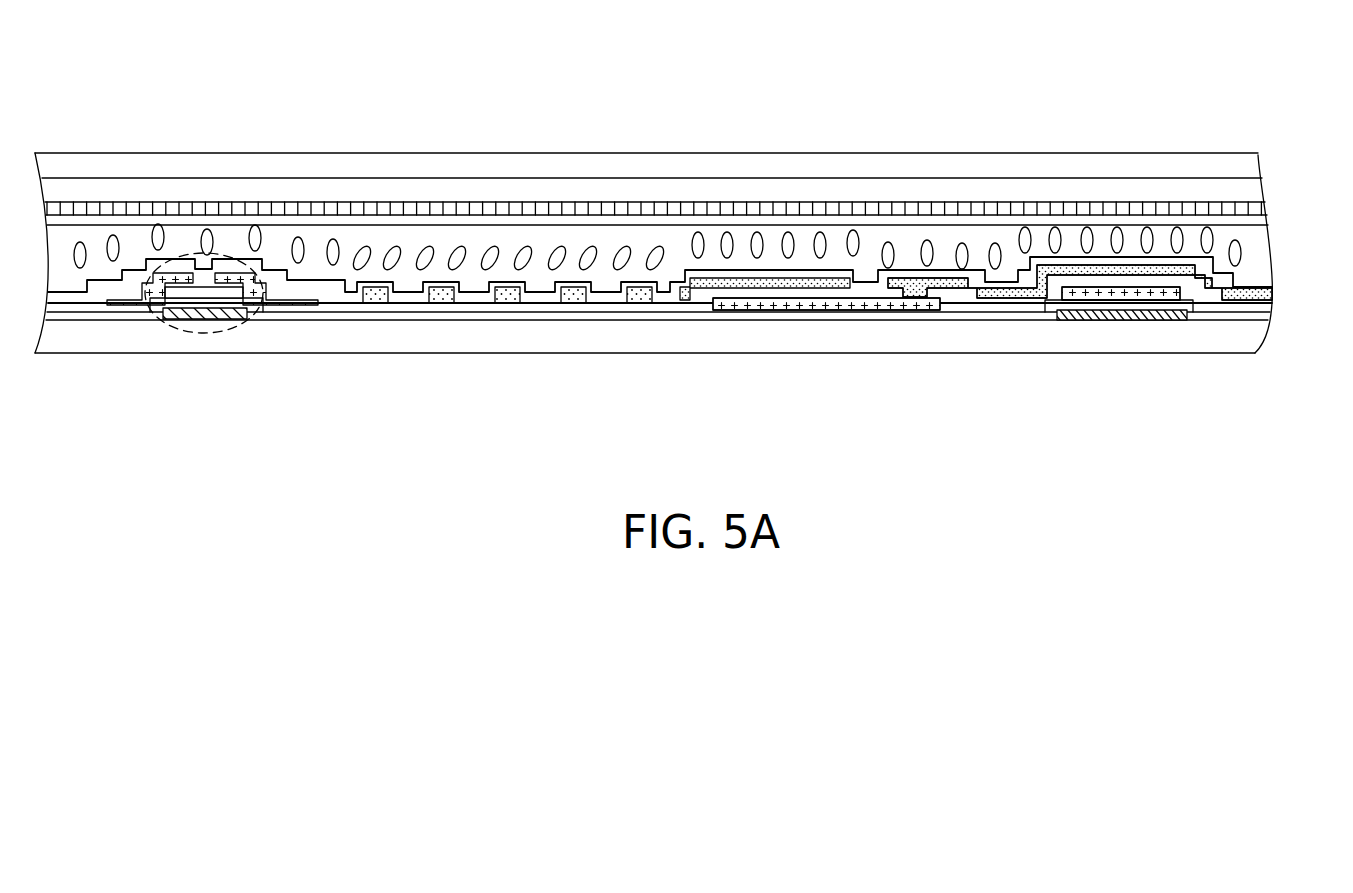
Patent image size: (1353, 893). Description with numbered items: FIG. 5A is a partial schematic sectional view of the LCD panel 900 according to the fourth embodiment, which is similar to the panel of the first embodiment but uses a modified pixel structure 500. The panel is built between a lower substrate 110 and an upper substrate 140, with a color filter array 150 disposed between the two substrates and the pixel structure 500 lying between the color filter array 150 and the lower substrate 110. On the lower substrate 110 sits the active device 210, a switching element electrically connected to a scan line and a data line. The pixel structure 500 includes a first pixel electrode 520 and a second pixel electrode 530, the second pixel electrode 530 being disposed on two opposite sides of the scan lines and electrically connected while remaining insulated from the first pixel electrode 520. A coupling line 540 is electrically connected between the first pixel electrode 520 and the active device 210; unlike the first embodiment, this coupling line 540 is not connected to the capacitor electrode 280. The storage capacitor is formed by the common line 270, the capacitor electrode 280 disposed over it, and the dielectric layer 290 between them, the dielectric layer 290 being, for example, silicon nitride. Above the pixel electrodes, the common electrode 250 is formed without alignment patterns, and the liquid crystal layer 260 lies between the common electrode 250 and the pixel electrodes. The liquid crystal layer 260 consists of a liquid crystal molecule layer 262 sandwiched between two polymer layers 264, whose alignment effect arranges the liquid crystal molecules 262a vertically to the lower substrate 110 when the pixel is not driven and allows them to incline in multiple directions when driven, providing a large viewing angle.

The lower substrate 110 is at (57, 335).
The upper substrate 140 is at (158, 168).
The color filter array 150 is at (111, 192).
The active device 210 is at (204, 345).
The common electrode 250 is at (558, 208).
The liquid crystal layer 260 is at (659, 243).
The liquid crystal molecule layer 262 is at (272, 243).
The liquid crystal molecules 262a is at (457, 253).
The polymer layers 264 is at (333, 222).
The common line 270 is at (1148, 318).
The capacitor electrode 280 is at (1077, 300).
The dielectric layer 290 is at (662, 314).
The pixel structure 500 is at (1295, 203).
The first pixel electrode 520 is at (922, 290).
The second pixel electrode 530 is at (771, 283).
The coupling line 540 is at (773, 310).
The LCD panel 900 is at (1271, 505).